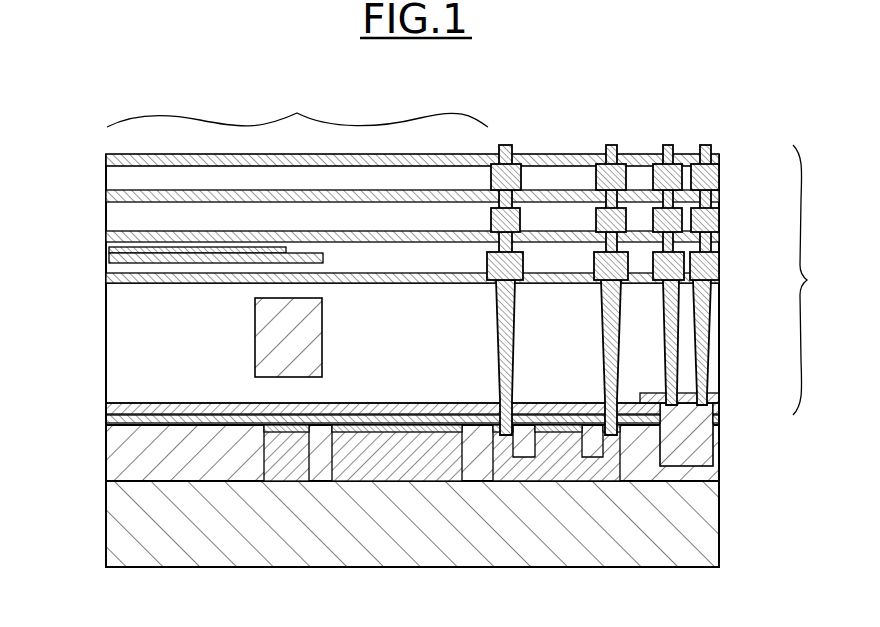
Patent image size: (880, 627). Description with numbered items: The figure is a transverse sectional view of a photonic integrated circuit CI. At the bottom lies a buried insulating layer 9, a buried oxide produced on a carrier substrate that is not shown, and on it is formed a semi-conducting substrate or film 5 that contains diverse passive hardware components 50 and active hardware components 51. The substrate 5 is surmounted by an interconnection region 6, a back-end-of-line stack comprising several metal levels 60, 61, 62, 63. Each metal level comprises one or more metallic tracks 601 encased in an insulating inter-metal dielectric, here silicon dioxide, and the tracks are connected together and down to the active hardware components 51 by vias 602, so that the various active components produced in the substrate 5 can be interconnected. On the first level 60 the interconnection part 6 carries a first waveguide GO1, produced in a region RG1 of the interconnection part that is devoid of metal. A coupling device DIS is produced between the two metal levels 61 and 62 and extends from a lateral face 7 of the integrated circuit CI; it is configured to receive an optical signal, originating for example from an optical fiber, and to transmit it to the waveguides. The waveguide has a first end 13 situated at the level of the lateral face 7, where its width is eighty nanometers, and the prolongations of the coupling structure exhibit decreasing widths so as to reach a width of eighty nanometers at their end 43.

The semi-conducting substrate 5 is at (728, 453).
The buried insulating layer 9 is at (728, 527).
The passive hardware components 50 is at (285, 458).
The active hardware components 51 is at (558, 458).
The first metal level 60 is at (726, 350).
The second metal level 61 is at (726, 265).
The metal level 62 is at (726, 218).
The metal level 63 is at (726, 173).
The interconnection region 6 is at (808, 280).
The metallic tracks 601 is at (491, 178).
The vias 602 is at (497, 247).
The lateral face 7 is at (110, 340).
The first end 13 is at (108, 250).
The end of prolongation 43 is at (323, 259).
The first waveguide GO1 is at (258, 340).
The region devoid of metal RG1 is at (297, 108).
The integrated circuit CI is at (84, 203).
The coupling device DIS is at (105, 268).